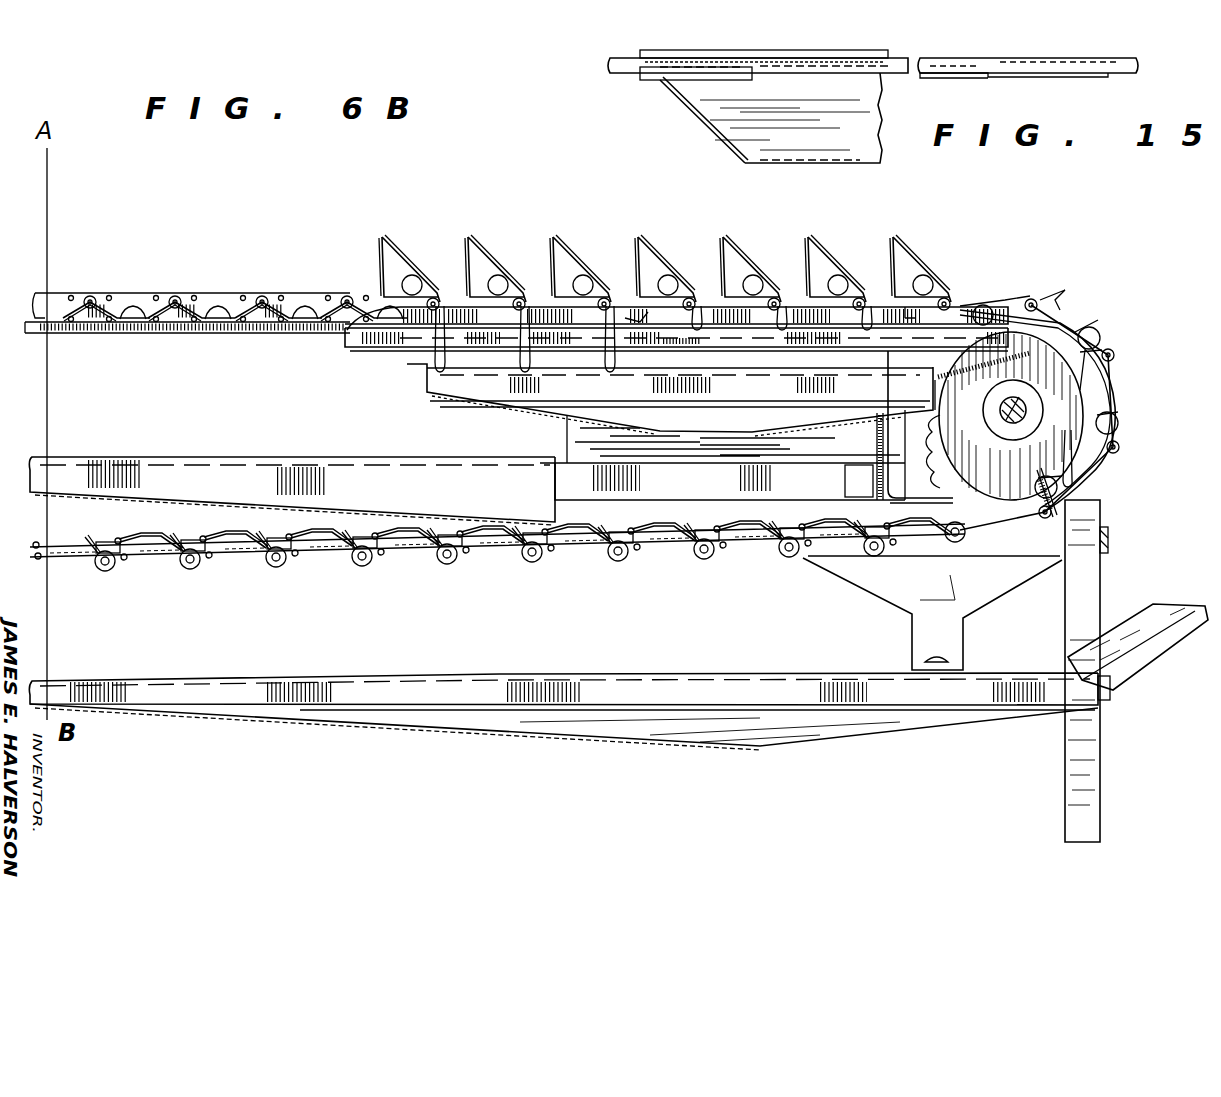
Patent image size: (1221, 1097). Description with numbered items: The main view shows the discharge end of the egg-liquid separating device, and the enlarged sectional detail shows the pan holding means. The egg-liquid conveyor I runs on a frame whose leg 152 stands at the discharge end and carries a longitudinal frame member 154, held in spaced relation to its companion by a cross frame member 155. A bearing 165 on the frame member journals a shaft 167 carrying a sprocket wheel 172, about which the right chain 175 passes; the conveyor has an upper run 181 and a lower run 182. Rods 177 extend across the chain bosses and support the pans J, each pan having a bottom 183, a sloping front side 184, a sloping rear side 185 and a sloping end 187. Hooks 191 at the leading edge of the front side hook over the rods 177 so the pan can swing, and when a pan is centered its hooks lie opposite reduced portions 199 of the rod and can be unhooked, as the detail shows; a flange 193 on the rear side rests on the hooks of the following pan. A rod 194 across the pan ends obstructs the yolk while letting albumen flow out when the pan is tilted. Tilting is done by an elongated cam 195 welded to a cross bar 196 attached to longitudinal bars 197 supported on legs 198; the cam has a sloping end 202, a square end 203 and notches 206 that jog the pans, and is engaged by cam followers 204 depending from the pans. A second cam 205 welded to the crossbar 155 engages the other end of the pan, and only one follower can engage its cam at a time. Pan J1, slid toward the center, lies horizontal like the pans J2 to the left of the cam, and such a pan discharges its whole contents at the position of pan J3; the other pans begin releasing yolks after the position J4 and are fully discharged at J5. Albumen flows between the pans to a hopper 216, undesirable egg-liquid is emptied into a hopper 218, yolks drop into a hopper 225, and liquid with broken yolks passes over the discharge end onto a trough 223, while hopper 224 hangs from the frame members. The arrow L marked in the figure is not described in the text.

In FIG. 6B, the leg 152 is at (1100, 762).
In FIG. 6B, the longitudinal frame member 154 is at (668, 485).
In FIG. 6B, the cross frame member 155 is at (845, 484).
In FIG. 6B, the bearing 165 is at (1052, 330).
In FIG. 6B, the shaft 167 is at (1030, 408).
In FIG. 6B, the sprocket wheel 172 is at (886, 452).
In FIG. 6B, the right chain 175 is at (1090, 490).
In FIG. 6B, the rod 177 is at (262, 300).
In FIG. 15, the rod 177 is at (1122, 58).
In FIG. 6B, the upper run 181 is at (112, 325).
In FIG. 6B, the lower run 182 is at (300, 551).
In FIG. 6B, the bottom 183 is at (468, 275).
In FIG. 15, the bottom 183 is at (848, 165).
In FIG. 6B, the sloping front side 184 is at (520, 347).
In FIG. 6B, the sloping rear side 185 is at (555, 250).
In FIG. 15, the sloping rear side 185 is at (860, 102).
In FIG. 15, the sloping end 187 is at (716, 132).
In FIG. 6B, the hook 191 is at (528, 330).
In FIG. 15, the hook 191 is at (682, 80).
In FIG. 6B, the flange 193 is at (386, 236).
In FIG. 15, the flange 193 is at (718, 50).
In FIG. 6B, the rod 194 is at (432, 300).
In FIG. 6B, the elongated cam 195 is at (402, 340).
In FIG. 6B, the cross bar 196 is at (688, 350).
In FIG. 6B, the longitudinal bar 197 is at (330, 335).
In FIG. 6B, the leg 198 is at (830, 432).
In FIG. 15, the reduced portion 199 is at (1057, 73).
In FIG. 6B, the sloping end 202 is at (357, 340).
In FIG. 6B, the square end 203 is at (1010, 298).
In FIG. 6B, the cam follower 204 is at (378, 305).
In FIG. 6B, the cam 205 is at (572, 351).
In FIG. 6B, the notch 206 is at (640, 318).
In FIG. 6B, the hopper 216 is at (835, 380).
In FIG. 6B, the hopper 218 is at (440, 508).
In FIG. 6B, the trough 223 is at (1160, 612).
In FIG. 6B, the hopper 224 is at (665, 705).
In FIG. 6B, the hopper 225 is at (888, 588).
In FIG. 6B, the pan J is at (642, 250).
In FIG. 15, the pan J is at (822, 57).
In FIG. 6B, the pan J1 is at (938, 340).
In FIG. 6B, the pans J2 is at (143, 320).
In FIG. 6B, the pan J3 is at (1085, 332).
In FIG. 6B, the pans J4 is at (960, 480).
In FIG. 6B, the pans J5 is at (992, 541).
In FIG. 6B, the egg-liquid conveyor I is at (361, 530).
In FIG. 6B, the direction arrow L is at (705, 520).